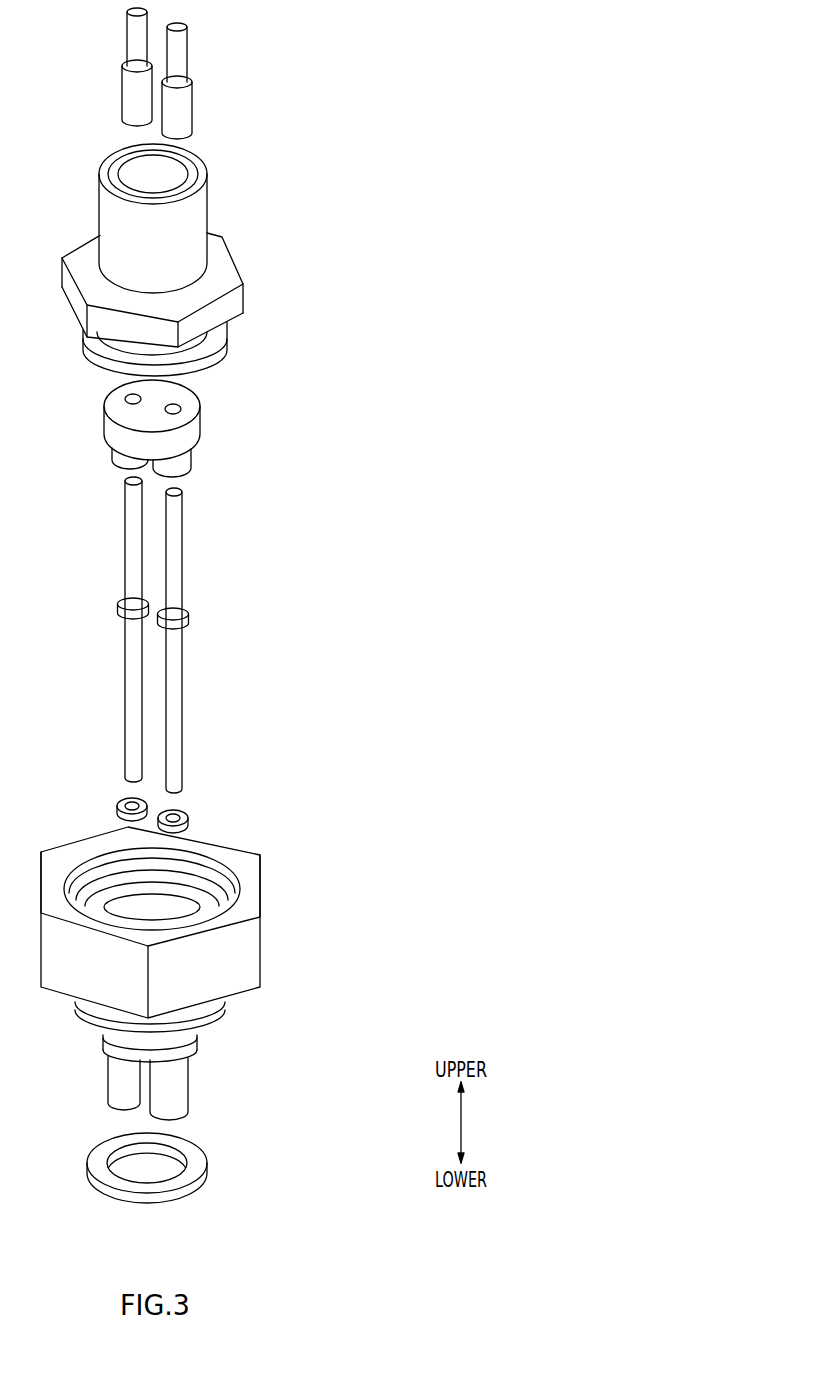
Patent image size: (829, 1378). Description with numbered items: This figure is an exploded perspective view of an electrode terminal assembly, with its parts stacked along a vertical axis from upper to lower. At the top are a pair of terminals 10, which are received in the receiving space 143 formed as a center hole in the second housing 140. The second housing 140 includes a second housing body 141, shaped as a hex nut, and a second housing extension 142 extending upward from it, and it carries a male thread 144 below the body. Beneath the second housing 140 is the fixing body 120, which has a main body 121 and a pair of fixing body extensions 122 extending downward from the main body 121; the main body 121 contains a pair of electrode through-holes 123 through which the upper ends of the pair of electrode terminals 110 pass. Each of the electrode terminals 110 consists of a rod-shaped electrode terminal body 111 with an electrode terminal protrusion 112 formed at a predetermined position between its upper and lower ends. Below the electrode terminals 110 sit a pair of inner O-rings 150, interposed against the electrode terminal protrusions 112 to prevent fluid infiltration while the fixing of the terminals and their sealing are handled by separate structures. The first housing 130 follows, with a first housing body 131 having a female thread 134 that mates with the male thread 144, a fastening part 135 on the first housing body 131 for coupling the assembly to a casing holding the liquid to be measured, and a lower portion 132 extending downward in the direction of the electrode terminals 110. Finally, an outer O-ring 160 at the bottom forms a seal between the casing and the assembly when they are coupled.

The terminals 10 is at (177, 58).
The electrode terminals 110 is at (154, 635).
The electrode terminal body 111 is at (133, 640).
The electrode terminal protrusion 112 is at (118, 605).
The fixing body 120 is at (178, 428).
The main body 121 is at (192, 432).
The fixing body extensions 122 is at (178, 458).
The electrode through-holes 123 is at (173, 411).
The first housing 130 is at (229, 973).
The first housing body 131 is at (232, 942).
The lower housing pins 132 is at (234, 1088).
The female thread 134 is at (207, 892).
The fastening part 135 is at (205, 1013).
The second housing 140 is at (233, 260).
The second housing body 141 is at (230, 299).
The second housing extension 142 is at (172, 222).
The receiving space 143 is at (157, 177).
The male thread 144 is at (215, 349).
The inner O-rings 150 is at (158, 822).
The outer O-ring 160 is at (197, 1162).